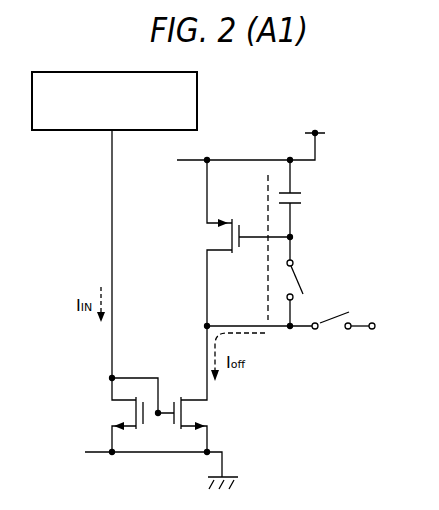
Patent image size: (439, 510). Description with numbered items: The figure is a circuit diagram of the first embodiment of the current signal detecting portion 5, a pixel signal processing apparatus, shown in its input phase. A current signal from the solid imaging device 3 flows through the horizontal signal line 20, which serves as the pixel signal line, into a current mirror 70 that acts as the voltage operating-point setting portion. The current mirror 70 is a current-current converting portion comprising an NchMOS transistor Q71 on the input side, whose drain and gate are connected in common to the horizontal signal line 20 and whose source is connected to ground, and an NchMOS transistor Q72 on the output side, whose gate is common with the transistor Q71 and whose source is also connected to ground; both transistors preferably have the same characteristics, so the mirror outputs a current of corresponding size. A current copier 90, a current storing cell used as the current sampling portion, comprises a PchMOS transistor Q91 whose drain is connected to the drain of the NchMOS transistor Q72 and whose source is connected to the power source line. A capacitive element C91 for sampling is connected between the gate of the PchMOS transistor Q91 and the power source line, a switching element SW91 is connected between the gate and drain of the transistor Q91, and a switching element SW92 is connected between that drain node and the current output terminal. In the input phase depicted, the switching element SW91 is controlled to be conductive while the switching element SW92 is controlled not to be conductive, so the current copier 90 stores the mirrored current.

The solid imaging device 3 is at (197, 100).
The current signal detecting portion 5 is at (322, 118).
The horizontal signal line 20 is at (112, 205).
The current mirror 70 is at (157, 434).
The current copier 90 is at (239, 176).
The NchMOS transistor Q71 is at (115, 415).
The NchMOS transistor Q72 is at (210, 416).
The PchMOS transistor Q91 is at (210, 238).
The capacitive element C91 is at (306, 200).
The switching element SW91 is at (322, 258).
The switching element SW92 is at (332, 330).